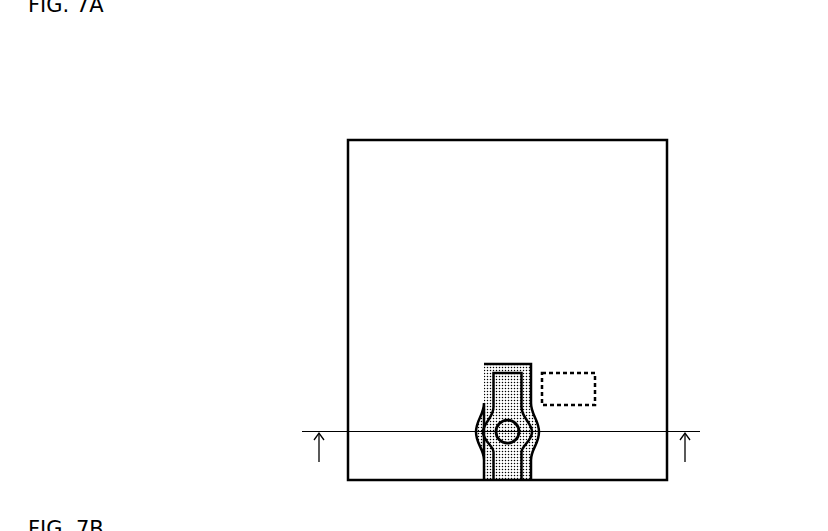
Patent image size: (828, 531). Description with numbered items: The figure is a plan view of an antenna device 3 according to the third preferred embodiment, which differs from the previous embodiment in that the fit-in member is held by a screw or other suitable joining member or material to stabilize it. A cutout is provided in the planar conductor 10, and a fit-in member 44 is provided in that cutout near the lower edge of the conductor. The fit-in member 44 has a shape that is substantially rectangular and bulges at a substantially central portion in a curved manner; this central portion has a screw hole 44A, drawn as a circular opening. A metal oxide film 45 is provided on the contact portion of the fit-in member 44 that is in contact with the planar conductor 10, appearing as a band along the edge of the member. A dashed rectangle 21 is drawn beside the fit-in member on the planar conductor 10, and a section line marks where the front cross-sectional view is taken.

The antenna device 3 is at (294, 109).
The planar conductor 10 is at (367, 152).
The electrode region 21 is at (612, 373).
The fit-in member 44 is at (509, 475).
The screw hole 44A is at (504, 437).
The metal oxide film 45 is at (525, 477).